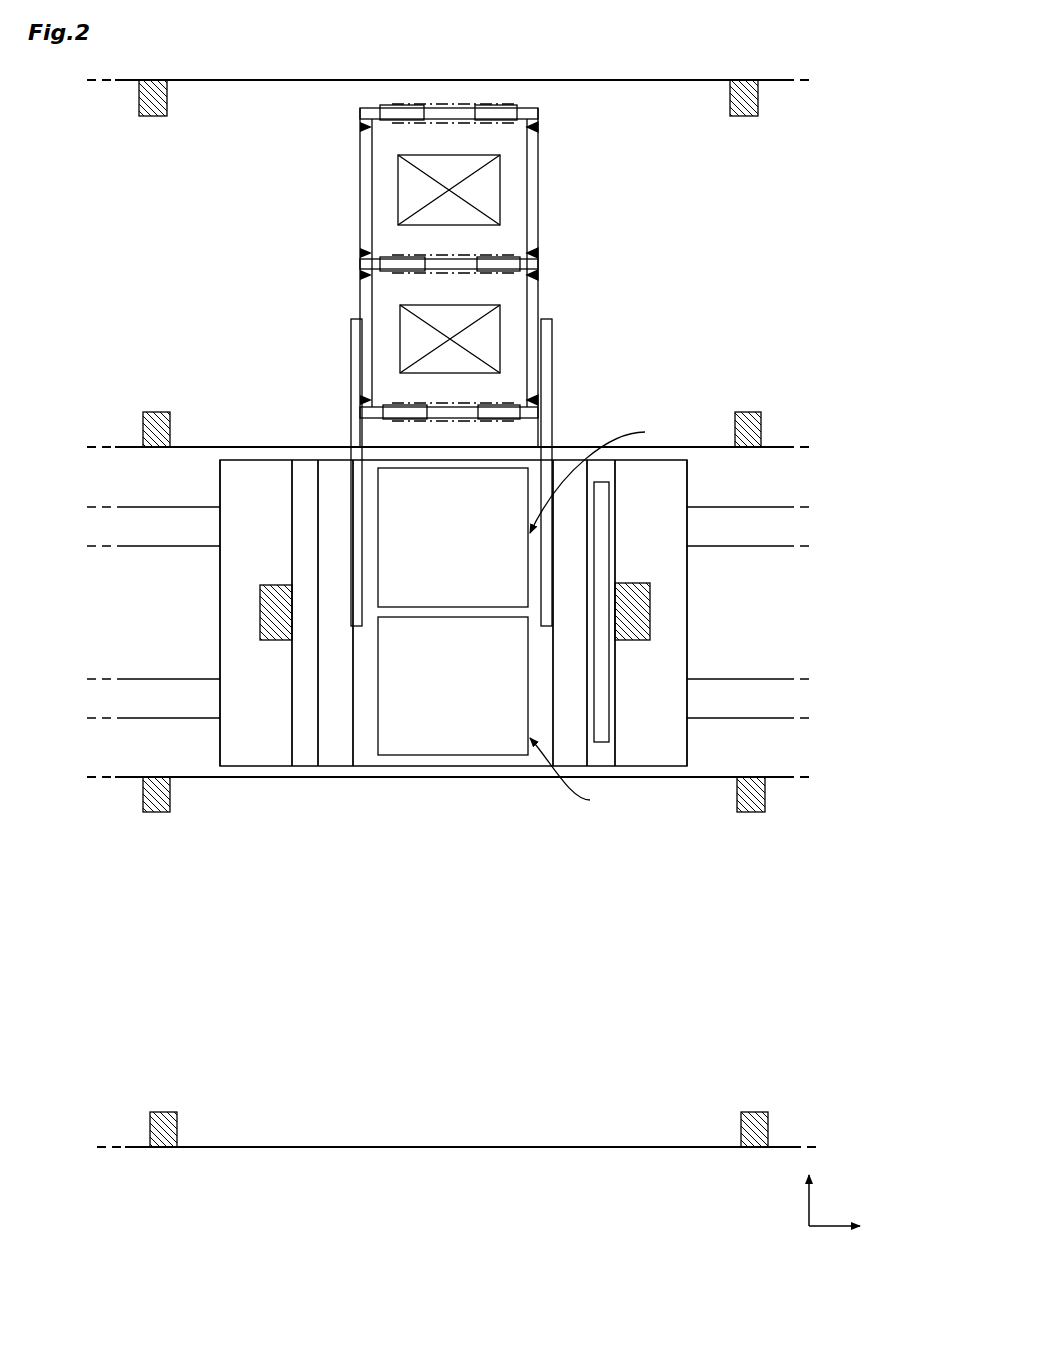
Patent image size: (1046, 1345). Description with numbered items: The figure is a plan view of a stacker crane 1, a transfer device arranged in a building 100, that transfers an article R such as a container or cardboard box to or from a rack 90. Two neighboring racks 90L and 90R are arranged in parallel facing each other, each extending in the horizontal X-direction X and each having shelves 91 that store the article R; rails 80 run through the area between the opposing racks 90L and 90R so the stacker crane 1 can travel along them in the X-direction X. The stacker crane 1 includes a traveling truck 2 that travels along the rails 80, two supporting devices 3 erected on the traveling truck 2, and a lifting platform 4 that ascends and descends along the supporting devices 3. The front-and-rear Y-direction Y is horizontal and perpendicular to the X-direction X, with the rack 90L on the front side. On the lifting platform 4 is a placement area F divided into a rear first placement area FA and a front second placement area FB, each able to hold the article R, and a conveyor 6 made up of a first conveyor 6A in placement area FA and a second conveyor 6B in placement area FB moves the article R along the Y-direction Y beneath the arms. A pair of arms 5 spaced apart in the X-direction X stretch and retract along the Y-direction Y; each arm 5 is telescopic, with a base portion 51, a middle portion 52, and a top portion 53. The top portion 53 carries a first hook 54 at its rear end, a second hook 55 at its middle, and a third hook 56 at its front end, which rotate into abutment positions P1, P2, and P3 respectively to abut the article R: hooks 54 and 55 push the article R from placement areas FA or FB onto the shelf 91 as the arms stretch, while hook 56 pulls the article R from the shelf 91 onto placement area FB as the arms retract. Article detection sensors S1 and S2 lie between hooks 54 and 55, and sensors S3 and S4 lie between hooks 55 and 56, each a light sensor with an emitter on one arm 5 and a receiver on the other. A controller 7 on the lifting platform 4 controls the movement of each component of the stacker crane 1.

The stacker crane 1 is at (206, 479).
The traveling truck 2 is at (672, 640).
The supporting device 3 is at (273, 592).
The lifting platform 4 is at (305, 690).
The arm 5 is at (458, 437).
The conveyor 6 is at (453, 649).
The first conveyor 6A is at (478, 742).
The second conveyor 6B is at (432, 595).
The controller 7 is at (603, 700).
The base portion 51 is at (461, 572).
The middle portion 52 is at (355, 350).
The top portion 53 is at (362, 223).
The first hook 54 is at (500, 412).
The second hook 55 is at (503, 265).
The third hook 56 is at (495, 112).
The rail 80 is at (762, 540).
The rack 90 is at (453, 625).
The left rack 90L is at (507, 60).
The right rack 90R is at (535, 1168).
The shelf 91 is at (232, 98).
The building 100 is at (713, 38).
The placement area F is at (619, 614).
The first placement area FA is at (594, 775).
The second placement area FB is at (619, 474).
The first abutment position P1 is at (470, 400).
The second abutment position P2 is at (458, 252).
The third abutment position P3 is at (380, 109).
The article R is at (402, 183).
The first article detection sensor S1 is at (545, 398).
The second article detection sensor S2 is at (545, 280).
The third article detection sensor S3 is at (528, 250).
The fourth article detection sensor S4 is at (545, 125).
The X-direction X is at (835, 1230).
The Y-direction Y is at (806, 1197).